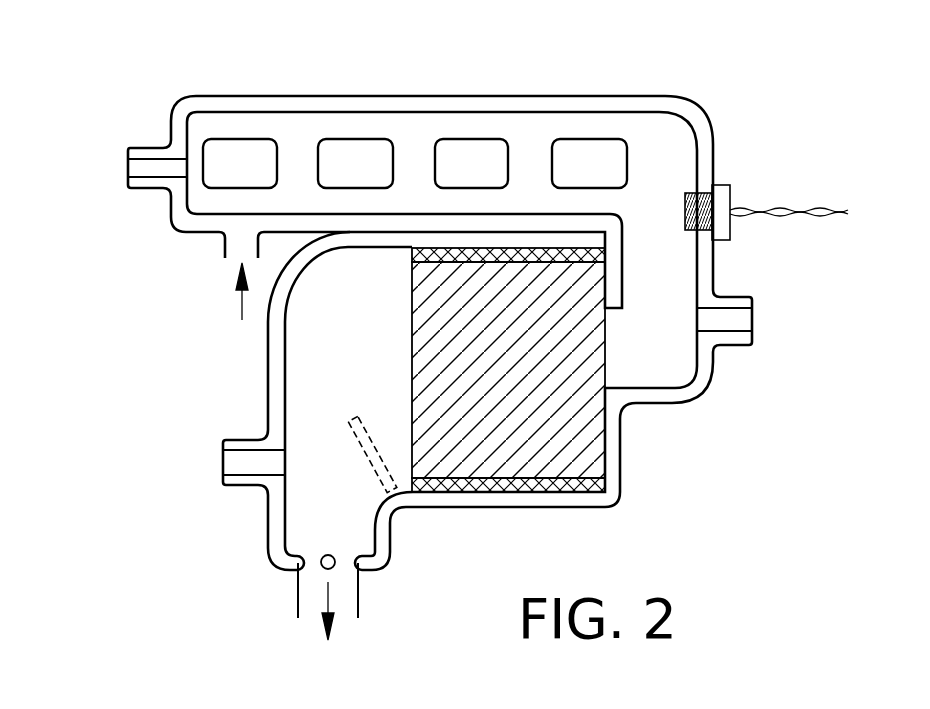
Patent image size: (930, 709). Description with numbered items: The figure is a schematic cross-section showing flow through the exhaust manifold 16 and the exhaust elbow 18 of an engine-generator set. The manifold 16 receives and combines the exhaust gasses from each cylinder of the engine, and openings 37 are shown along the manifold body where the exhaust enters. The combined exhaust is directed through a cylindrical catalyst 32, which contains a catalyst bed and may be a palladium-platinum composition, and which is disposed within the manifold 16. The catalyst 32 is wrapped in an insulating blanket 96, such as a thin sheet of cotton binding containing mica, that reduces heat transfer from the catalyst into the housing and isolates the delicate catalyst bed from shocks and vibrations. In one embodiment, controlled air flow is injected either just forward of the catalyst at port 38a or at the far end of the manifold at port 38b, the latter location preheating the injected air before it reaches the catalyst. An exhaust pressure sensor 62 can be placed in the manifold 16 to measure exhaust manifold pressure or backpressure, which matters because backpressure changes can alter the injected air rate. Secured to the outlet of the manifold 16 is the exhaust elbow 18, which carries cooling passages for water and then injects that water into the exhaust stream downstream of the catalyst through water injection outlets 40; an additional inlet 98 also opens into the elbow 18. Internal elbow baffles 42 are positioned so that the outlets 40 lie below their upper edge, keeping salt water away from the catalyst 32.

The exhaust manifold 16 is at (447, 95).
The runner openings 37 is at (587, 138).
The exhaust pressure sensor 62 is at (730, 198).
The port 38b is at (112, 166).
The port 38a is at (775, 330).
The exhaust elbow 18 is at (267, 355).
The air inlet 98 is at (195, 467).
The catalyst 32 is at (588, 455).
The insulating blanket 96 is at (523, 490).
The internal elbow baffle 42 is at (372, 432).
The water injection outlet 40 is at (334, 569).